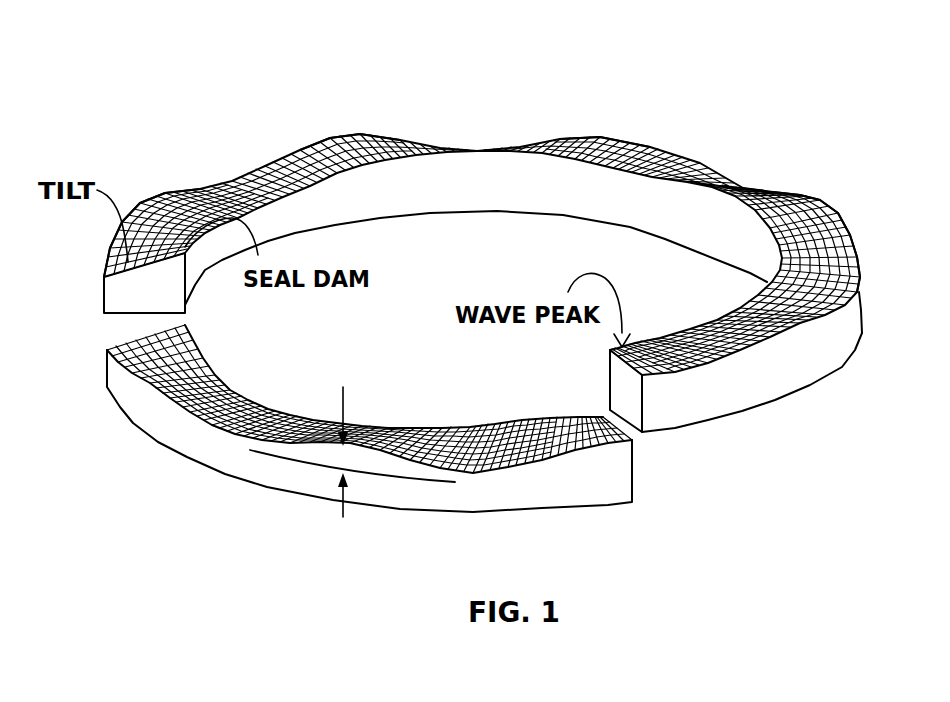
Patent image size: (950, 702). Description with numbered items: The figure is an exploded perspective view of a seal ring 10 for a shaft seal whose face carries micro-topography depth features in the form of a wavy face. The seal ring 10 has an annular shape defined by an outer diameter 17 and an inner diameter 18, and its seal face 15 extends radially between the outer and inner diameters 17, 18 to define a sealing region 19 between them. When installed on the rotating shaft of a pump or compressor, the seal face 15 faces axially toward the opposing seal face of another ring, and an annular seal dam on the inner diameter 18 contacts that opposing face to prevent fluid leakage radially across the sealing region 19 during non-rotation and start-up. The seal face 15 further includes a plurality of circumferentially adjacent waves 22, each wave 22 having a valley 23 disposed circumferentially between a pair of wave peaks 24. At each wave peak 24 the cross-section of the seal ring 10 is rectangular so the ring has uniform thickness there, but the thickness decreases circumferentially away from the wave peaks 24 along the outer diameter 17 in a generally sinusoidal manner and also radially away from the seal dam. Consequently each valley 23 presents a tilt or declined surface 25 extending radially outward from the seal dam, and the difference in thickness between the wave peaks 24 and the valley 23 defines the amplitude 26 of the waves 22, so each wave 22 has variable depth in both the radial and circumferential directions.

The seal ring 10 is at (366, 121).
The seal face 15 is at (212, 416).
The outer diameter 17 is at (762, 388).
The inner diameter 18 is at (572, 185).
The sealing region 19 is at (175, 201).
The wave 22 is at (291, 126).
The valley 23 is at (754, 173).
The wave peak 24 is at (637, 147).
The tilt or declined surface 25 is at (105, 263).
The amplitude 26 is at (347, 493).